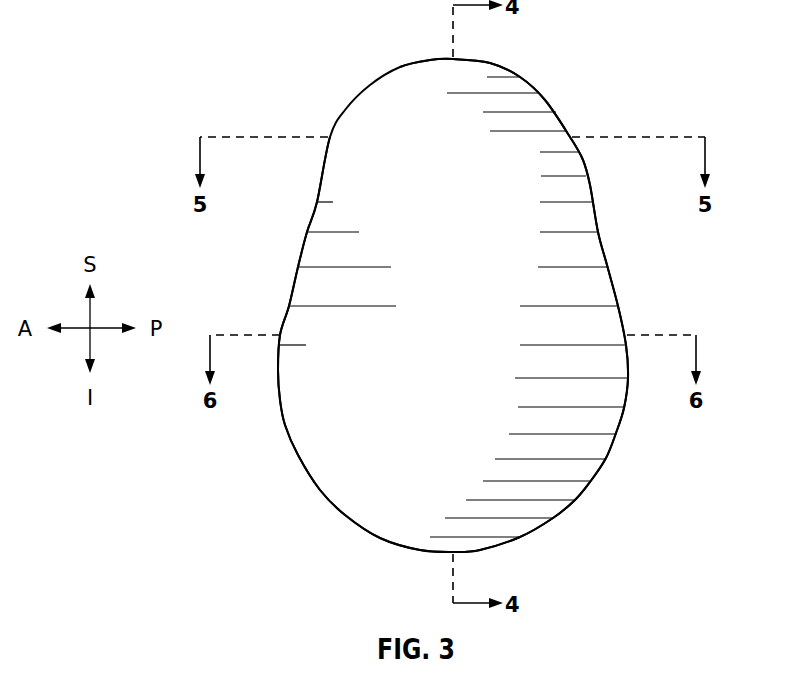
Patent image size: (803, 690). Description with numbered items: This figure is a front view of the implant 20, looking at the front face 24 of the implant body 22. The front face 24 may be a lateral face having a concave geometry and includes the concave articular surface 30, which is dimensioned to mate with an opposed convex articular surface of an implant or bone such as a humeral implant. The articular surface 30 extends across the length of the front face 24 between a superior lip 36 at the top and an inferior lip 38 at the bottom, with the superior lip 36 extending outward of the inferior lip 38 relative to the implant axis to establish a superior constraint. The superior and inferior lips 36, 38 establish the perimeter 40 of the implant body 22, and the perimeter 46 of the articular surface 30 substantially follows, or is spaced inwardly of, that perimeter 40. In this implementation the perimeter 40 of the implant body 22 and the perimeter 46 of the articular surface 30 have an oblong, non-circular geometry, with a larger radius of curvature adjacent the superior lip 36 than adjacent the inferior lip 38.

The implant 20 is at (174, 51).
The implant body 22 is at (281, 424).
The front face 24 is at (311, 502).
The articular surface 30 is at (318, 468).
The superior lip 36 is at (523, 78).
The inferior lip 38 is at (519, 538).
The perimeter of the implant body 40 is at (621, 418).
The perimeter of the articular surface 46 is at (603, 465).